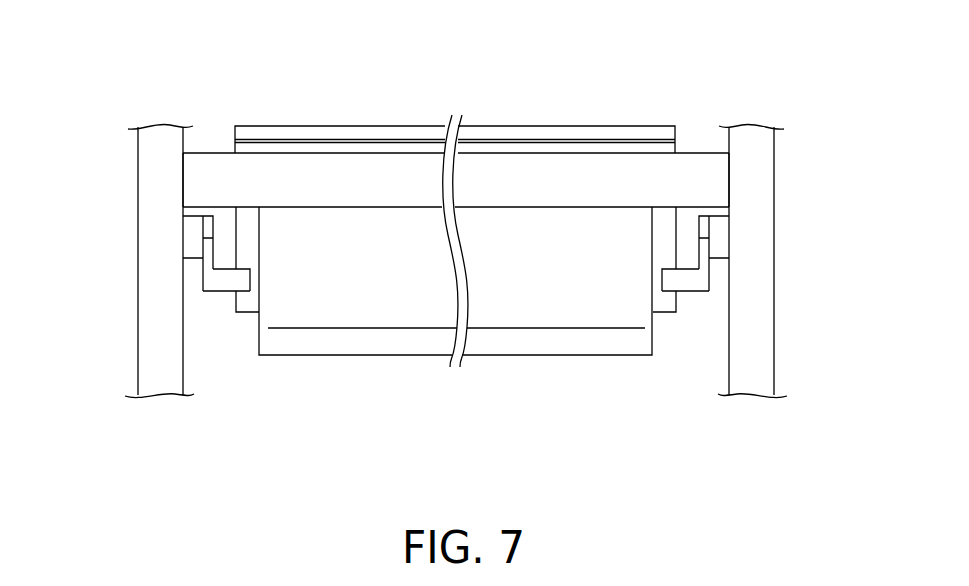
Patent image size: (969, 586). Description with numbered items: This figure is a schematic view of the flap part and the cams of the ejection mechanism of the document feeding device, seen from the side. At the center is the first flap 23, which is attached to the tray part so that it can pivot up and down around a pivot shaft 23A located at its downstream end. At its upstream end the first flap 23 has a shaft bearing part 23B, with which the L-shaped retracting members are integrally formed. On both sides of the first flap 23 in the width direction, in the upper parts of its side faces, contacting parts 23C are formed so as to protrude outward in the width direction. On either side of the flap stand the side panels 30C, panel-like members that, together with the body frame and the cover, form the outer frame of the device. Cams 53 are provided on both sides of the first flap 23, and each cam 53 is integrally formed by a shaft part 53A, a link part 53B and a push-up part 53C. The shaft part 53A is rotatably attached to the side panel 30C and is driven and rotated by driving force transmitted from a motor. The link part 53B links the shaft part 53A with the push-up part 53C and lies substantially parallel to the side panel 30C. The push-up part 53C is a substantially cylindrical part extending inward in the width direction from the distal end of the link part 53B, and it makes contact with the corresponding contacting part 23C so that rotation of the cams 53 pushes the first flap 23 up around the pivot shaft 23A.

The first flap 23 is at (600, 118).
The pivot shaft 23A is at (525, 163).
The shaft bearing part 23B is at (532, 344).
The contacting parts 23C is at (247, 304).
The side panels 30C is at (150, 164).
The cams 53 is at (455, 271).
The shaft part 53A is at (189, 240).
The link part 53B is at (203, 280).
The push-up part 53C is at (232, 285).